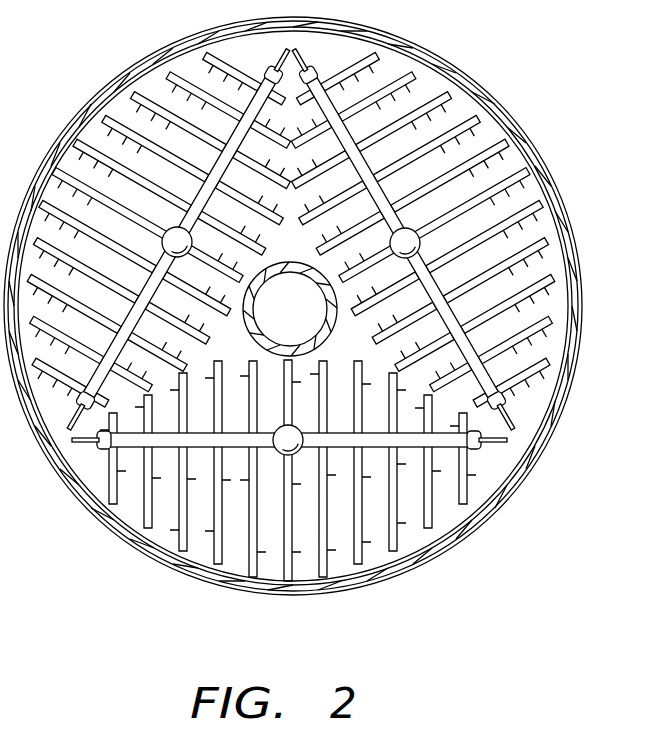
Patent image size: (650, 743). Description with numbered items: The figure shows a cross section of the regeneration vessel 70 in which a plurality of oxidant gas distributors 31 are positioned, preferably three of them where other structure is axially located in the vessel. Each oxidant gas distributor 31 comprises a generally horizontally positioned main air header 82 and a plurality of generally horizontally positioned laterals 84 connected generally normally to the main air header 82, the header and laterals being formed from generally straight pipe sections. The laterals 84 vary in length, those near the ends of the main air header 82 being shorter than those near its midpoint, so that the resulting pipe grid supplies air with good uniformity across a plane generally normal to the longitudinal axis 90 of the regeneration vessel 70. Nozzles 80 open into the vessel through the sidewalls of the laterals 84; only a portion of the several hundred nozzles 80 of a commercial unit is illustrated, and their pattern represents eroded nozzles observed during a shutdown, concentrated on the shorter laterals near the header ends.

The regeneration vessel 70 is at (549, 175).
The oxidant gas distributor 31 is at (90, 470).
The laterals 84 is at (471, 209).
The main air header 82 is at (367, 263).
The nozzle 80 is at (391, 245).
The longitudinal axis 90 is at (290, 308).